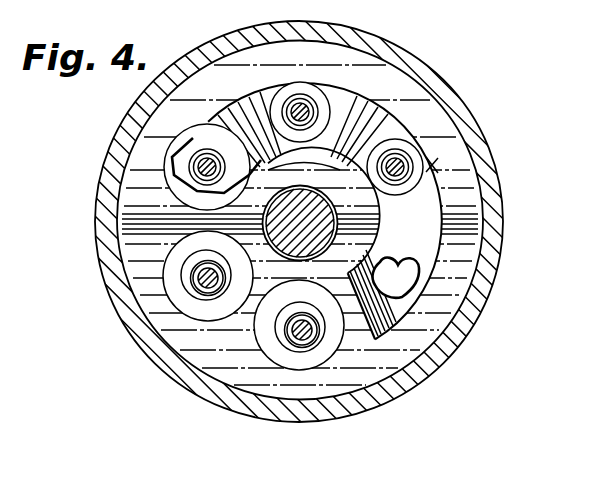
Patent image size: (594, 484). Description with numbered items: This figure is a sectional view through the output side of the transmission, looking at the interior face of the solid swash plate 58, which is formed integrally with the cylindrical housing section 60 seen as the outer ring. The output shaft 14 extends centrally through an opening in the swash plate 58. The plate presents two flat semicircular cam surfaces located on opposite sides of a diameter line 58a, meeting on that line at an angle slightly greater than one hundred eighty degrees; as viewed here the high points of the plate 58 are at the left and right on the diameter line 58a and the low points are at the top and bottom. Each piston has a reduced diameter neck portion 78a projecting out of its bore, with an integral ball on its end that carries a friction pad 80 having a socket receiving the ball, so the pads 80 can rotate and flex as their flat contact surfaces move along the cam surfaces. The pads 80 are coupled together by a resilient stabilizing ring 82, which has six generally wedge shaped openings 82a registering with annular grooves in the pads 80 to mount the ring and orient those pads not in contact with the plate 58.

The output shaft 14 is at (300, 237).
The swash plate 58 is at (458, 298).
The diameter line 58a is at (150, 216).
The cylindrical housing section 60 is at (493, 197).
The neck portion 78a is at (207, 165).
The friction pad 80 is at (276, 81).
The stabilizing ring 82 is at (432, 165).
The wedge shaped opening 82a is at (394, 262).